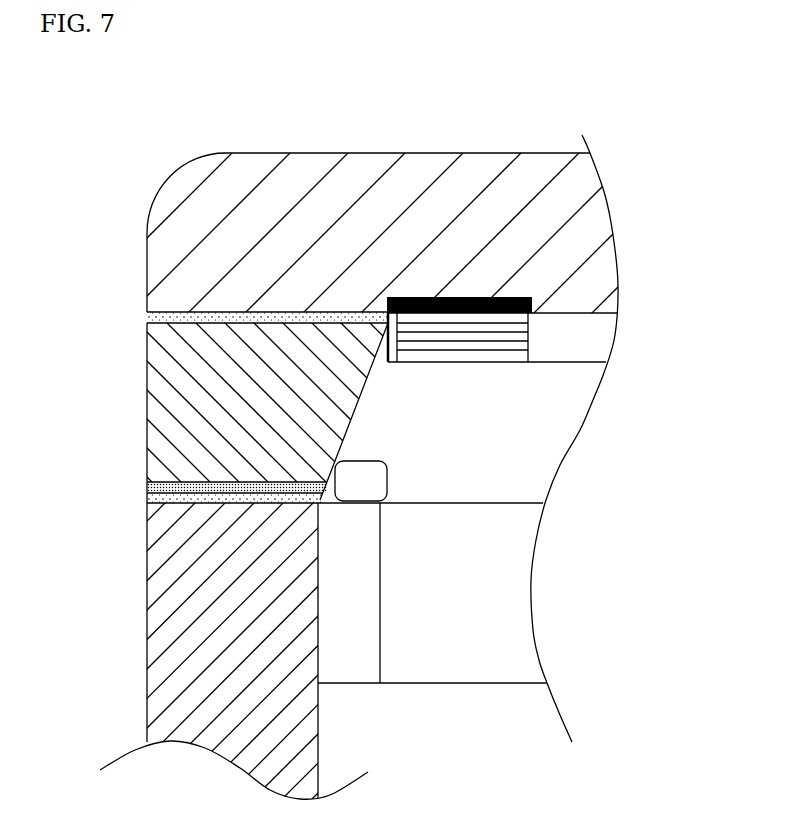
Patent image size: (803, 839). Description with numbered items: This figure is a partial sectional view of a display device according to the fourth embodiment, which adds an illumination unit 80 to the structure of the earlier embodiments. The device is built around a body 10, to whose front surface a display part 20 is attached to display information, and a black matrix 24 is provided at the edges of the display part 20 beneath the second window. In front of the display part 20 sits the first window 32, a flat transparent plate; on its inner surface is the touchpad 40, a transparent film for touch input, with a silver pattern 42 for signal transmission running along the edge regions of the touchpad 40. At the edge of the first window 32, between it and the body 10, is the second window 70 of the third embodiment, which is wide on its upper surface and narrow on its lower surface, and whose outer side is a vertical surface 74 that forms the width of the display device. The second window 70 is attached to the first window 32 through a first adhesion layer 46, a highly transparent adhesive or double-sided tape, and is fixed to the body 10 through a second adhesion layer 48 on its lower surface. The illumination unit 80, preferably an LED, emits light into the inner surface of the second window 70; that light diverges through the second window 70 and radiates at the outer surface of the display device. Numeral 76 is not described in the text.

The body 10 is at (165, 631).
The display part 20 is at (518, 600).
The black matrix 24 is at (345, 673).
The first window 32 is at (422, 178).
The touchpad 40 is at (598, 340).
The silver pattern 42 is at (480, 353).
The first adhesion layer 46 is at (287, 315).
The second adhesion layer 48 is at (148, 498).
The second window 70 is at (165, 413).
The vertical surface 74 is at (147, 352).
The lower adhesive layer 76 is at (160, 485).
The illumination unit 80 is at (375, 473).